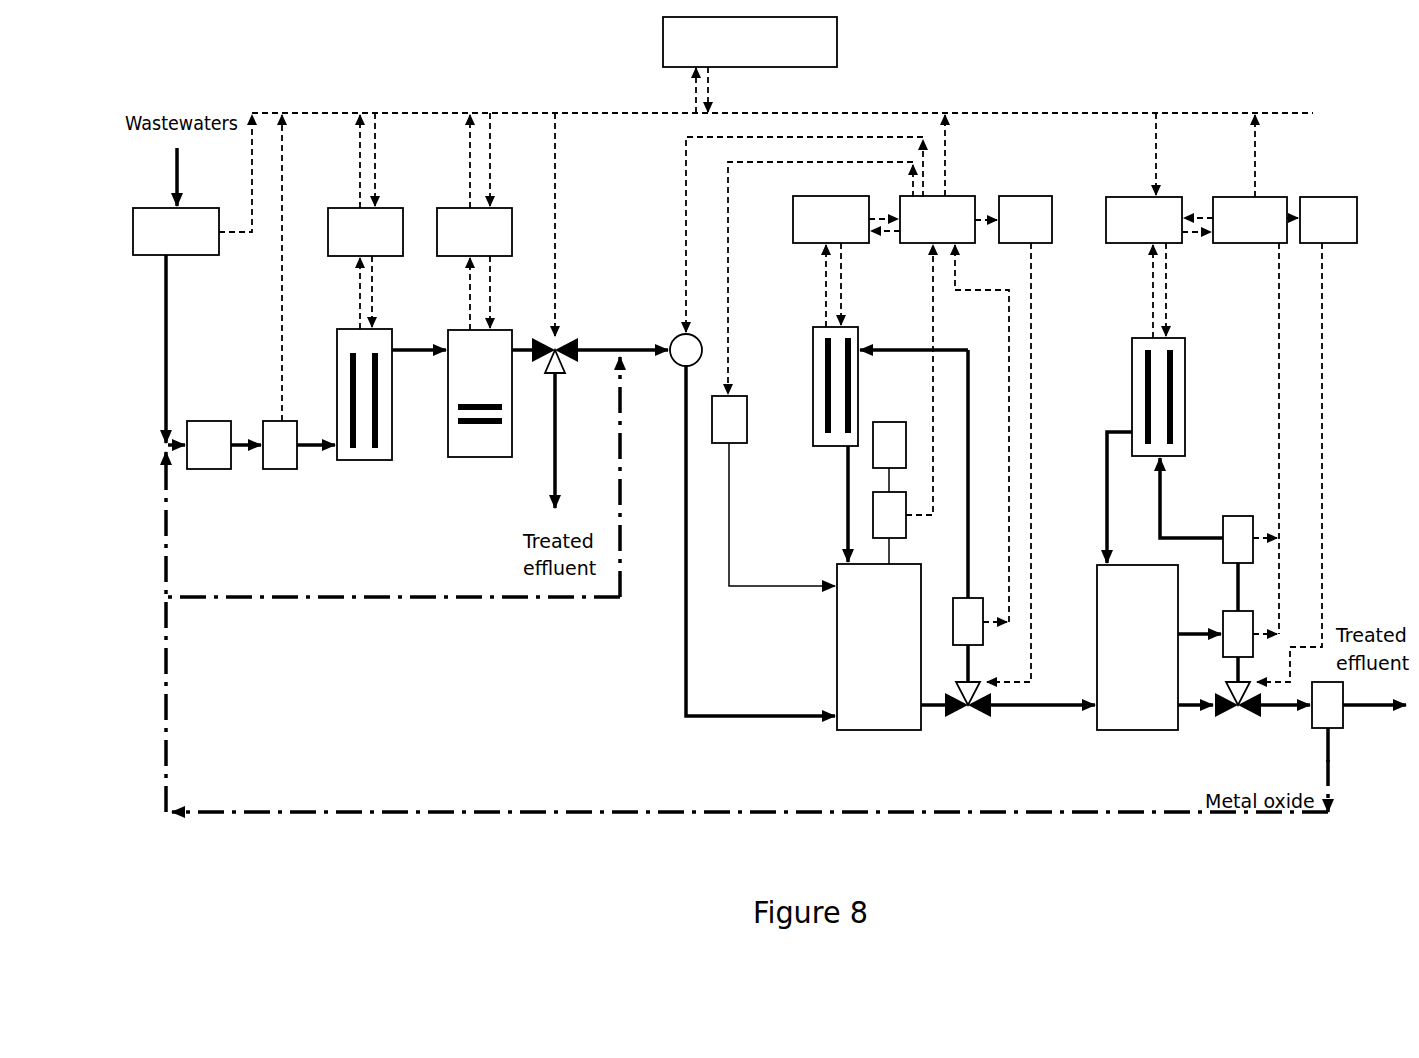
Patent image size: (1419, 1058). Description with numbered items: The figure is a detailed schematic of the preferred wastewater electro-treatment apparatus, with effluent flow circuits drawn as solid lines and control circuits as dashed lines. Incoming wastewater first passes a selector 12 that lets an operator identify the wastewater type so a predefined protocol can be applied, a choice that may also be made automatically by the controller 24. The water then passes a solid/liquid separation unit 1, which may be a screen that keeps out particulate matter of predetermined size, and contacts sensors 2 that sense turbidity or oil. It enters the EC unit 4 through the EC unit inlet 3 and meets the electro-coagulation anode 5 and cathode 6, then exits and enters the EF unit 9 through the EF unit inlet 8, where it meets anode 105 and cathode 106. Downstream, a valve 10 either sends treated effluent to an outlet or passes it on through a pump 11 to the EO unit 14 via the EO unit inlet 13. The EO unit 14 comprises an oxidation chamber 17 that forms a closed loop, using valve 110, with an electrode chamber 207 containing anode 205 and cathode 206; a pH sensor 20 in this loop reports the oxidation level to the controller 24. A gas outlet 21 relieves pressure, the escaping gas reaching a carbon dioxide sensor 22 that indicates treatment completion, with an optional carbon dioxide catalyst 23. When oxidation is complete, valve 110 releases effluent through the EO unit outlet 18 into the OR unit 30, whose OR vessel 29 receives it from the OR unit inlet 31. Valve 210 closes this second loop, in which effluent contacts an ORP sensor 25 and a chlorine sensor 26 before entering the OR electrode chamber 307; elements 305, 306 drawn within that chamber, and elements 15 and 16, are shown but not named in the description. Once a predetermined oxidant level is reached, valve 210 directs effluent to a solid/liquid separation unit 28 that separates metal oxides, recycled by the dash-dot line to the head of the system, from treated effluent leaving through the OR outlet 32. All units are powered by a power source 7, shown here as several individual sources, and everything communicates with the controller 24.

The solid/liquid separation unit 1 is at (214, 445).
The sensors 2 is at (280, 292).
The EC unit inlet 3 is at (316, 476).
The EC unit 4 is at (364, 430).
The anode 5 is at (361, 343).
The cathode 6 is at (352, 382).
The power source 7 is at (770, 225).
The EF unit inlet 8 is at (419, 327).
The EF unit 9 is at (480, 431).
The valve 10 is at (551, 310).
The pump 11 is at (640, 330).
The selector 12 is at (192, 279).
The EO unit inlet 13 is at (760, 562).
The EO unit 14 is at (903, 776).
The sensor 15 is at (1166, 439).
The reagent dosing unit 16 is at (773, 491).
The oxidation chamber 17 is at (879, 647).
The EO unit outlet 18 is at (1043, 732).
The pH sensor 20 is at (933, 516).
The gas outlet 21 is at (913, 551).
The CO2 sensor 22 is at (903, 391).
The CO2 catalyst 23 is at (889, 457).
The controller 24 is at (975, 325).
The ORP sensor 25 is at (1227, 646).
The Cl2 sensor 26 is at (1218, 534).
The solid/liquid separation unit 28 is at (1302, 722).
The OR vessel 29 is at (1137, 581).
The OR unit 30 is at (1149, 764).
The OR unit inlet 31 is at (1067, 748).
The OR outlet 32 is at (1374, 693).
The anode 105 is at (473, 403).
The cathode 106 is at (470, 425).
The valve 110 is at (956, 715).
The anode 205 is at (828, 346).
The cathode 206 is at (846, 409).
The electrode chamber 207 is at (820, 444).
The valve 210 is at (1219, 715).
The OR anode 305 is at (1170, 356).
The OR cathode 306 is at (1148, 411).
The OR electrode chamber 307 is at (1181, 397).